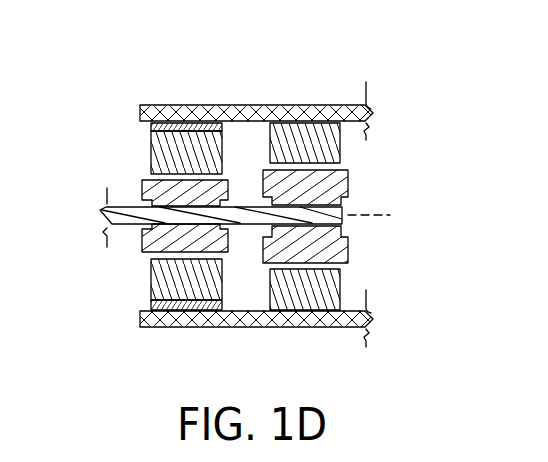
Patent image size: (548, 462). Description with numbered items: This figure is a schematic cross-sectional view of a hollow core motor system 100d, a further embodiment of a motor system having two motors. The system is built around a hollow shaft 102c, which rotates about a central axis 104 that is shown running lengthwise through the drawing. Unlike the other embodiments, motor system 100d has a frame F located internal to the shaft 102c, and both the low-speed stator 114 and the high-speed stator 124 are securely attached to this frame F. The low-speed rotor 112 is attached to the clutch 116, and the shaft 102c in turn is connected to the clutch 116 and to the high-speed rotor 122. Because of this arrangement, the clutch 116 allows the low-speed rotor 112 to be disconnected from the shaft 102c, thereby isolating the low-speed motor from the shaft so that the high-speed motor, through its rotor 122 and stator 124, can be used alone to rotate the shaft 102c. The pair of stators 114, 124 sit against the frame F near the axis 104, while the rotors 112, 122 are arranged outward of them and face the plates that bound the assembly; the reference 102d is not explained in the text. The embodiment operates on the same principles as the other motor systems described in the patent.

The motor system 100d is at (262, 43).
The shaft 102c is at (152, 105).
The lower substrate 102d is at (365, 328).
The clutch 116 is at (151, 126).
The low-speed rotor 112 is at (151, 288).
The low-speed stator 114 is at (143, 250).
The stator 124 is at (348, 240).
The rotor 122 is at (341, 272).
The central axis 104 is at (363, 212).
The frame F is at (122, 205).